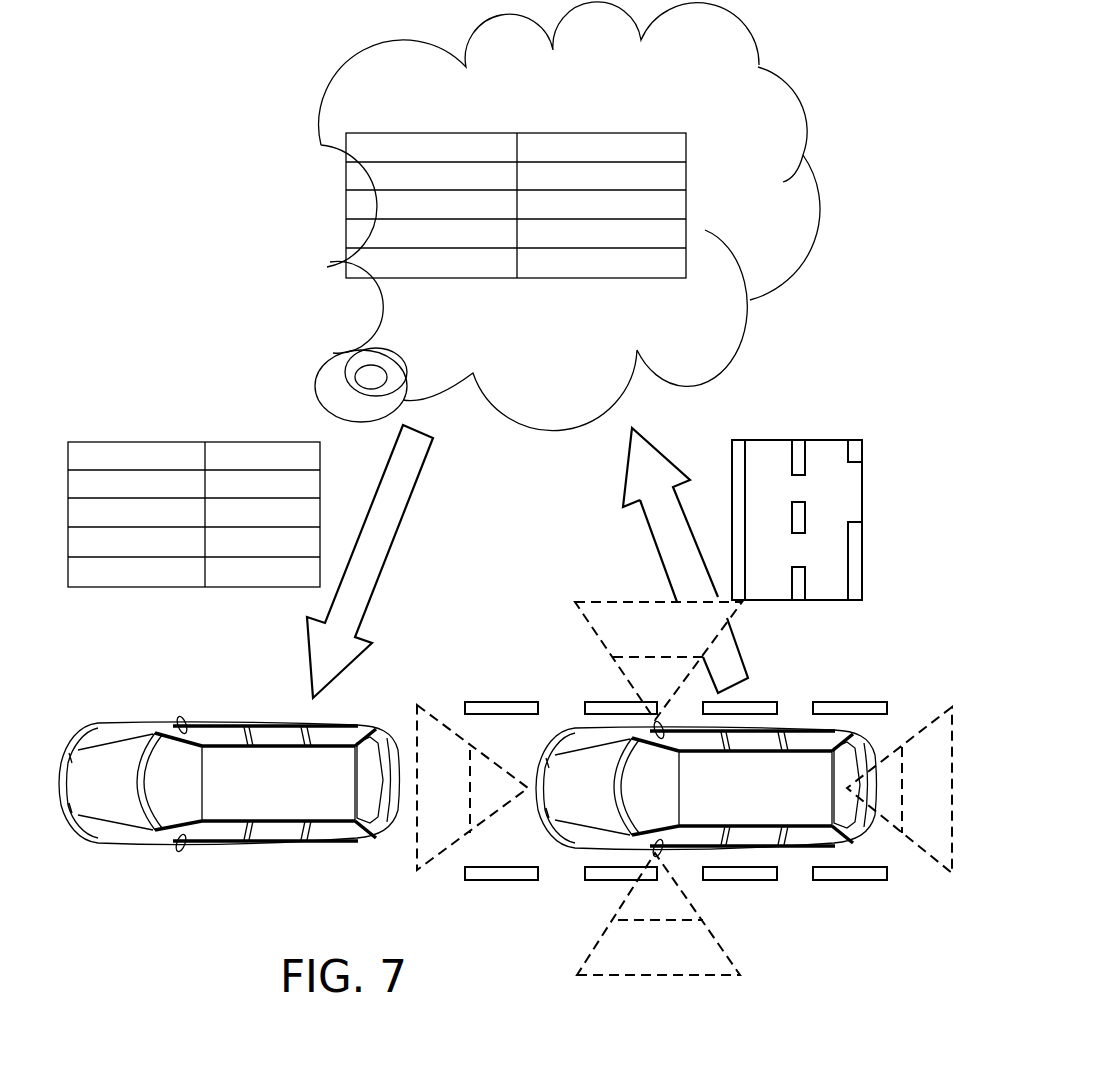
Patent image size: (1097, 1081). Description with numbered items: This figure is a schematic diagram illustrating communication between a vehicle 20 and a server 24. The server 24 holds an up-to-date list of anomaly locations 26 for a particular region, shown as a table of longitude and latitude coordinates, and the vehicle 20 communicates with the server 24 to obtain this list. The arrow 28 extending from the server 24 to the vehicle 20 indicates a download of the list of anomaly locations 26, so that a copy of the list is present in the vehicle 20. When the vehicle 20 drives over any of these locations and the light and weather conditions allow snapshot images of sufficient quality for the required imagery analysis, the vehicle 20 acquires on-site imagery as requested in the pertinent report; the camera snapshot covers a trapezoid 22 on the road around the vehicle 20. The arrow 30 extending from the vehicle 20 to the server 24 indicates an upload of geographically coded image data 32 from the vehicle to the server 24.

The vehicle 20 is at (122, 847).
The trapezoid 22 is at (597, 602).
The server 24 is at (812, 233).
The list of anomaly locations 26 is at (682, 140).
The arrow 28 is at (313, 630).
The arrow 30 is at (652, 448).
The geographically coded image data 32 is at (855, 478).